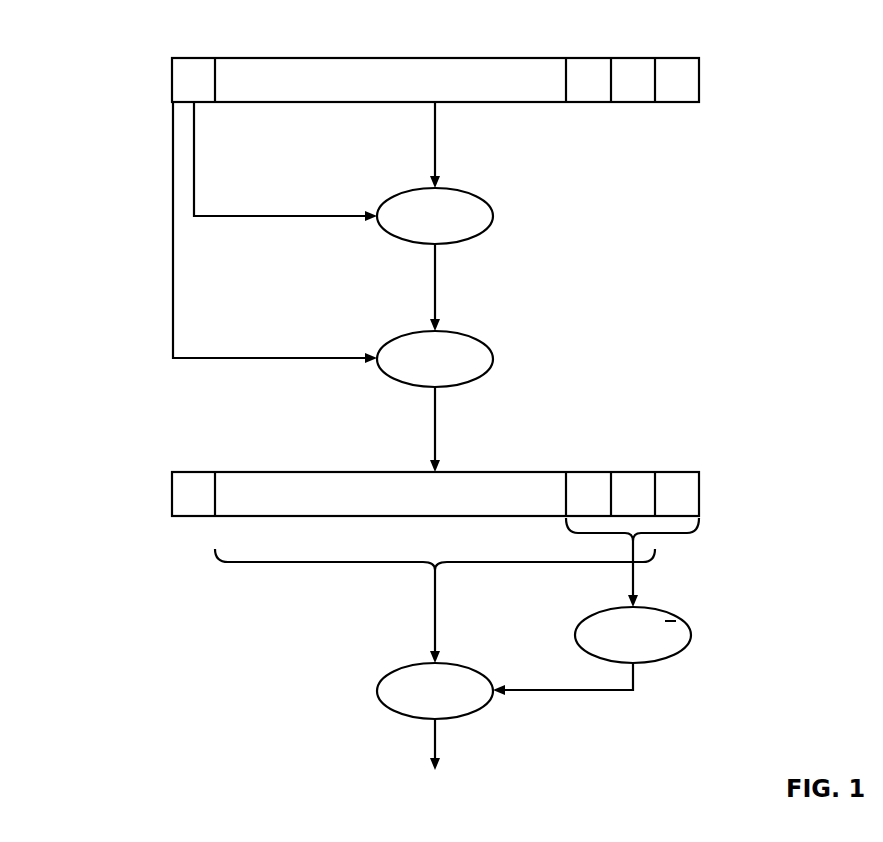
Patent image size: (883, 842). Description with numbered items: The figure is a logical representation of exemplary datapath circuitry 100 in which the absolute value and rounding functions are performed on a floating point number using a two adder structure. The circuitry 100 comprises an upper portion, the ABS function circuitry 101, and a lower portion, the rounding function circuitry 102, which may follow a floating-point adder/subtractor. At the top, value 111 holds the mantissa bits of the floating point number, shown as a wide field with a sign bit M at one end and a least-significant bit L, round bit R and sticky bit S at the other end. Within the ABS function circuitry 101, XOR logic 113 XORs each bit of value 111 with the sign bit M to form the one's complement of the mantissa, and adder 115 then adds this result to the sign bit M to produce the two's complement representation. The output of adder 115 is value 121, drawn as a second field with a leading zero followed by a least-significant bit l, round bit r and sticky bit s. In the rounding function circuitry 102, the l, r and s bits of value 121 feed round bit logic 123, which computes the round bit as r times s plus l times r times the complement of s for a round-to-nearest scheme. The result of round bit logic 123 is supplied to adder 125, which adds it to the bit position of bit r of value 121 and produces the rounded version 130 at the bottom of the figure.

The datapath circuitry 100 is at (114, 54).
The ABS function circuitry 101 is at (163, 58).
The rounding function circuitry 102 is at (163, 472).
The value 111 is at (505, 58).
The XOR logic 113 is at (467, 190).
The adder 115 is at (467, 333).
The value 121 is at (505, 472).
The round bit logic 123 is at (666, 661).
The adder 125 is at (468, 716).
The rounded version 130 is at (418, 799).